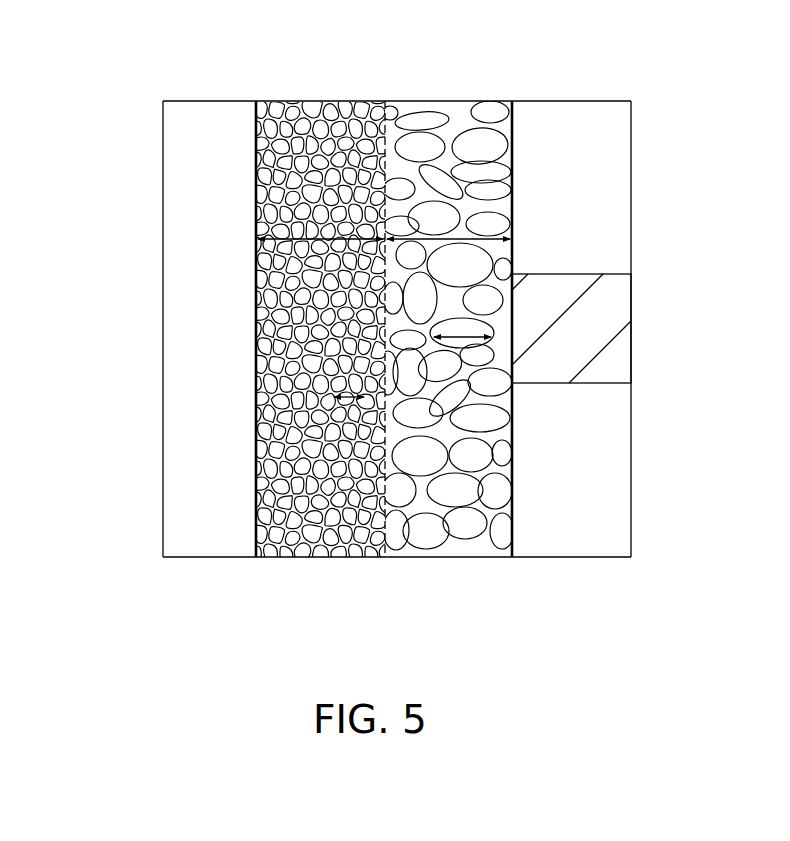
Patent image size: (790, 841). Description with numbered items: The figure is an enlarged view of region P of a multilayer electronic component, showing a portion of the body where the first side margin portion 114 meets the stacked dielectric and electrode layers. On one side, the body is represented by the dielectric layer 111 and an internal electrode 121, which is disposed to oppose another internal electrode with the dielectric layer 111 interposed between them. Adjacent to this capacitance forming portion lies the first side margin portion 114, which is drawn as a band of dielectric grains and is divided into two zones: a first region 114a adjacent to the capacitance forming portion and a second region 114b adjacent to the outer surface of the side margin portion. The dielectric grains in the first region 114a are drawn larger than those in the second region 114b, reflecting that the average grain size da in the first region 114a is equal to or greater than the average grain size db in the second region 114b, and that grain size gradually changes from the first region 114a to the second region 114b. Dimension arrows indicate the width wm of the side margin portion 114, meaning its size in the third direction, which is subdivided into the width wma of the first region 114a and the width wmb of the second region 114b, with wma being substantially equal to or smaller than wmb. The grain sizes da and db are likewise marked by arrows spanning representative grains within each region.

The dielectric layer 111 is at (618, 170).
The first side margin portion 114 is at (385, 281).
The first region 114a is at (446, 294).
The second region 114b is at (300, 113).
The internal electrode 121 is at (618, 345).
The width of the side margin portion wm is at (90, 180).
The average size of the first region in the third direction wma is at (340, 152).
The average size of the second region in the third direction wmb is at (256, 216).
The average size of dielectric grains in the first region da is at (456, 333).
The average size of dielectric grains in the second region db is at (335, 365).
The region P is at (408, 644).